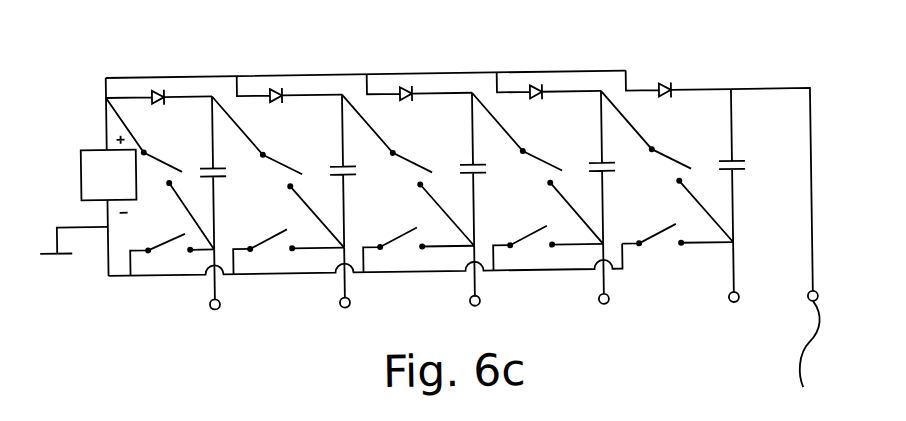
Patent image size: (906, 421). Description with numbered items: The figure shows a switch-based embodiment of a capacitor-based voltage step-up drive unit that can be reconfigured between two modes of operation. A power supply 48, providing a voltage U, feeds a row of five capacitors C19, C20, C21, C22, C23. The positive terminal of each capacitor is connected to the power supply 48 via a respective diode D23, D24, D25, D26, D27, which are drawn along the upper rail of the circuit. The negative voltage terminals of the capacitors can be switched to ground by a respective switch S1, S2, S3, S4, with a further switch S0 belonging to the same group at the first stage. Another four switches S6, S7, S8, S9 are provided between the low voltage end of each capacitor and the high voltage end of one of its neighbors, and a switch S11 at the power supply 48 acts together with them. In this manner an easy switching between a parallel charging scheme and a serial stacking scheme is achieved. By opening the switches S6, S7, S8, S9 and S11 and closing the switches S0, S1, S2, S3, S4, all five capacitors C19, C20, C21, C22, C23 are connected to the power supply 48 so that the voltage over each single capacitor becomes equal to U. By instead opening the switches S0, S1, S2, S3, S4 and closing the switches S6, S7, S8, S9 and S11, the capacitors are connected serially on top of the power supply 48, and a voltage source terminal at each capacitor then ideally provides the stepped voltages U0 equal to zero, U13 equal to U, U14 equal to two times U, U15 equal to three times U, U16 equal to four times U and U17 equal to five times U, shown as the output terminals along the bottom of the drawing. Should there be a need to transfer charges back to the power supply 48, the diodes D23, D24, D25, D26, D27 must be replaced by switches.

The power supply 48 is at (92, 160).
The diode D23 is at (158, 74).
The diode D24 is at (289, 74).
The diode D25 is at (419, 72).
The diode D26 is at (548, 70).
The diode D27 is at (678, 68).
The switch S11 is at (160, 173).
The switch S6 is at (278, 172).
The switch S7 is at (408, 170).
The switch S8 is at (537, 168).
The switch S9 is at (667, 166).
The switch S0 is at (172, 246).
The switch S1 is at (289, 245).
The switch S2 is at (419, 243).
The switch S3 is at (548, 241).
The switch S4 is at (678, 228).
The capacitor C19 is at (230, 173).
The capacitor C20 is at (360, 171).
The capacitor C21 is at (490, 169).
The capacitor C22 is at (619, 167).
The capacitor C23 is at (750, 165).
The voltage source terminal voltage U0 is at (223, 301).
The voltage source terminal voltage U13 is at (360, 299).
The voltage source terminal voltage U14 is at (490, 297).
The voltage source terminal voltage U15 is at (619, 295).
The voltage source terminal voltage U16 is at (749, 293).
The voltage source terminal voltage U17 is at (800, 398).